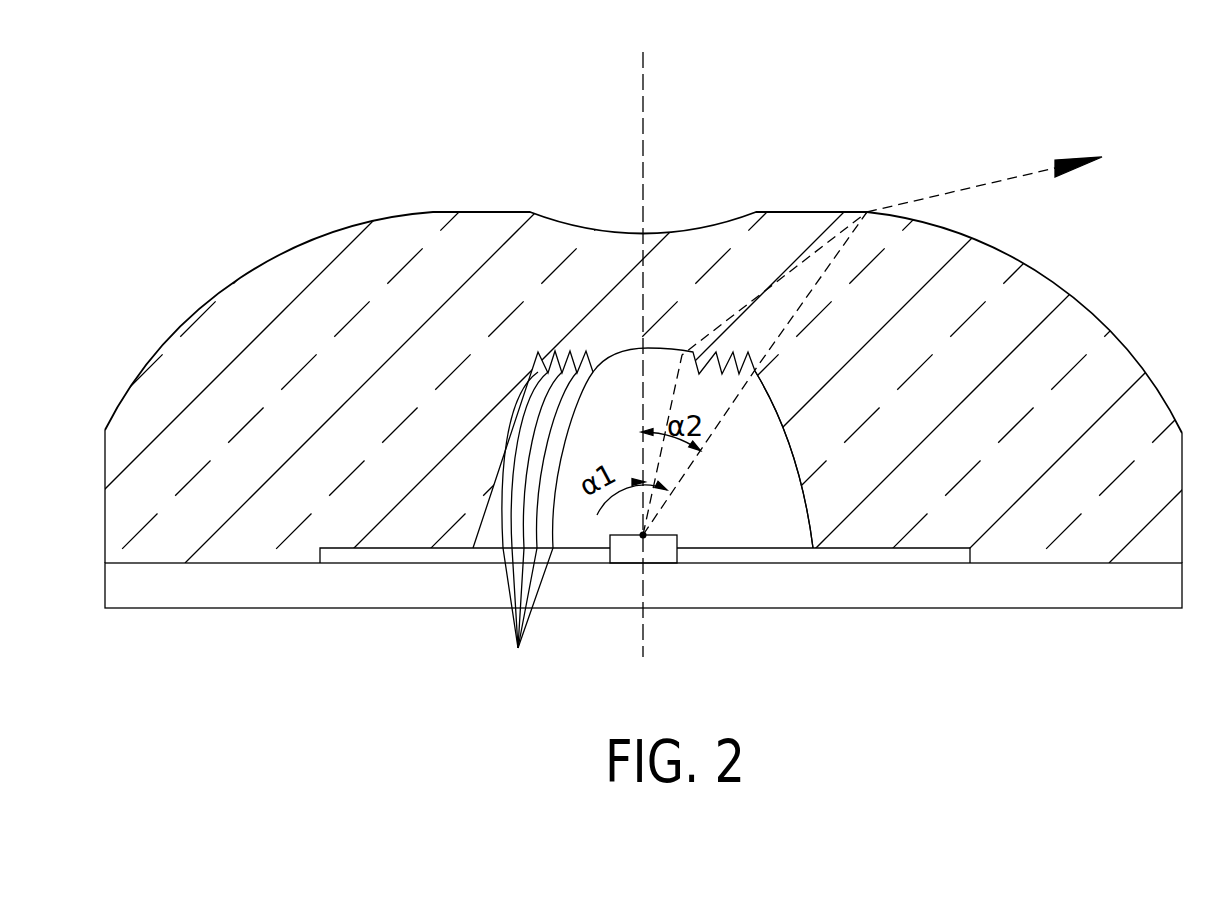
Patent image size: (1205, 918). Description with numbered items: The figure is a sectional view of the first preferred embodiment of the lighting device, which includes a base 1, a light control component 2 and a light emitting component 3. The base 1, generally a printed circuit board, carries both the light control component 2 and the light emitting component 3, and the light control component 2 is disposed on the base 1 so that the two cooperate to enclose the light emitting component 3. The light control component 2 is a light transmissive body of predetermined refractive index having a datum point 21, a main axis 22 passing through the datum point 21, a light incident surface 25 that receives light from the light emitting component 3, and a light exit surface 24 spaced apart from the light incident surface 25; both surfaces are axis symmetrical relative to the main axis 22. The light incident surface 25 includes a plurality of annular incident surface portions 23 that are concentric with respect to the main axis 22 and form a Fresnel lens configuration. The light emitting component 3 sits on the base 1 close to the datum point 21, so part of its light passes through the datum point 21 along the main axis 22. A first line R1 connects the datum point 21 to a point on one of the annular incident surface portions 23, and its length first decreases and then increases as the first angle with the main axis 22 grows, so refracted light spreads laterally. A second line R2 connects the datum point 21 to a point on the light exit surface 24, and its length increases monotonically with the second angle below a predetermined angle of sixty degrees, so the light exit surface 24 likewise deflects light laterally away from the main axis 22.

The base 1 is at (352, 590).
The light control component 2 is at (240, 193).
The light emitting component 3 is at (670, 553).
The datum point 21 is at (643, 535).
The main axis 22 is at (643, 92).
The annular incident surface portions 23 is at (547, 531).
The light exit surface 24 is at (170, 308).
The light incident surface 25 is at (786, 476).
The first line R1 is at (755, 373).
The second line R2 is at (755, 373).